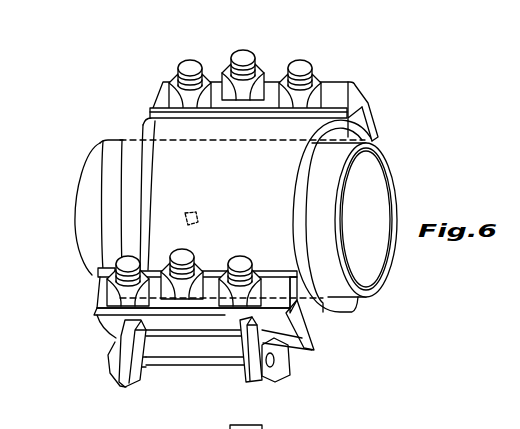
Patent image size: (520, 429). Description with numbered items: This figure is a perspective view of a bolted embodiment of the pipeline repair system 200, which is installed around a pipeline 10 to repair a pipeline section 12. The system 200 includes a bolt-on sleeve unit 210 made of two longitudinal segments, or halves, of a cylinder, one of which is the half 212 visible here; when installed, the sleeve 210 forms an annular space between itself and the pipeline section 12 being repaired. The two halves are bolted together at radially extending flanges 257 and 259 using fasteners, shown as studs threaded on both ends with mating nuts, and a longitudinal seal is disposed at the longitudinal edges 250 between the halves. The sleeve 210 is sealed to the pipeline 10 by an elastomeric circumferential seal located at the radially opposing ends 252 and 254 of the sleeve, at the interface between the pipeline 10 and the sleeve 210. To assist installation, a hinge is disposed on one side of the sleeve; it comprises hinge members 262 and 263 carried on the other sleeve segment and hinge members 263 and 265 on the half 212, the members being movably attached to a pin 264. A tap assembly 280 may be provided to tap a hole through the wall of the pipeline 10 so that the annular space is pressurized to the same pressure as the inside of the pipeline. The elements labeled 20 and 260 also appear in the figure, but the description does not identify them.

The pipeline repair system 200 is at (95, 122).
The pipeline 10 is at (100, 219).
The pipeline section 12 is at (148, 146).
The pipe joint gap 20 is at (183, 216).
The bolt-on sleeve unit 210 is at (342, 72).
The longitudinal segment of the sleeve 212 is at (192, 178).
The longitudinal edges 250 is at (368, 111).
The radially opposing end of the sleeve 252 is at (94, 157).
The radially opposing end of the sleeve 254 is at (310, 174).
The radially extending flange 257 is at (356, 101).
The radially extending flange 259 is at (374, 131).
The support bar 260 is at (193, 367).
The hinge member 262 is at (105, 373).
The hinge member 263 is at (286, 381).
The pin 264 is at (124, 334).
The hinge member 265 is at (313, 353).
The tap assembly 280 is at (300, 427).